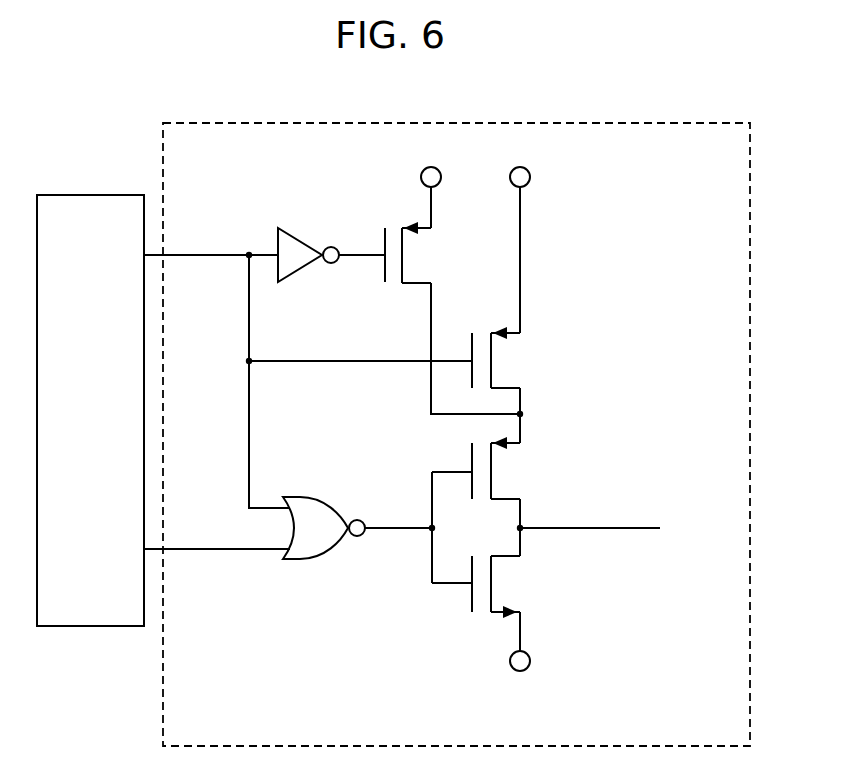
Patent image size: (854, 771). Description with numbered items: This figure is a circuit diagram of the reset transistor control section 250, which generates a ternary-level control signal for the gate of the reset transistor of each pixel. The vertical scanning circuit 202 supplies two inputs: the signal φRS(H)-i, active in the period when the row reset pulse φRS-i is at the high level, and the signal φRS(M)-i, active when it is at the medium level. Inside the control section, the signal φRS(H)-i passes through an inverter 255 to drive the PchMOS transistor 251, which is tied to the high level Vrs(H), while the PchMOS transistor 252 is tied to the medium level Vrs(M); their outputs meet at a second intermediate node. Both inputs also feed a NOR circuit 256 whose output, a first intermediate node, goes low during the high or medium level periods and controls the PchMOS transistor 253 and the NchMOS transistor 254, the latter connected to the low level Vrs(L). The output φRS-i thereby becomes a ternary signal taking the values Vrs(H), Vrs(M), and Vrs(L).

The vertical scanning circuit 202 is at (86, 194).
The reset transistor control section 250 is at (600, 122).
The PchMOS transistor 251 is at (425, 256).
The PchMOS transistor 252 is at (515, 361).
The PchMOS transistor 253 is at (515, 473).
The NchMOS transistor 254 is at (515, 584).
The inverter 255 is at (300, 272).
The NOR circuit 256 is at (310, 560).